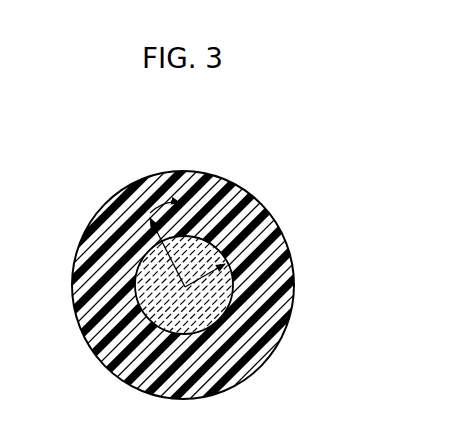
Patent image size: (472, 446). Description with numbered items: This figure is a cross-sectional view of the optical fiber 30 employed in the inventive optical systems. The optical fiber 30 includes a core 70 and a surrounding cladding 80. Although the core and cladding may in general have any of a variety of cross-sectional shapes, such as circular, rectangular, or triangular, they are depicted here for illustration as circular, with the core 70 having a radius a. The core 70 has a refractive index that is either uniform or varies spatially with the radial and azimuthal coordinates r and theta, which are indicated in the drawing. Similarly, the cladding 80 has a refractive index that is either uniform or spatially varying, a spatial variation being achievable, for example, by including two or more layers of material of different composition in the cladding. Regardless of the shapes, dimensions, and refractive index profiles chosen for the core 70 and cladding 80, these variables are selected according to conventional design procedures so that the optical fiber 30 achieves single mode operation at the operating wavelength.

The optical fiber 30 is at (193, 132).
The core 70 is at (232, 300).
The cladding 80 is at (264, 334).